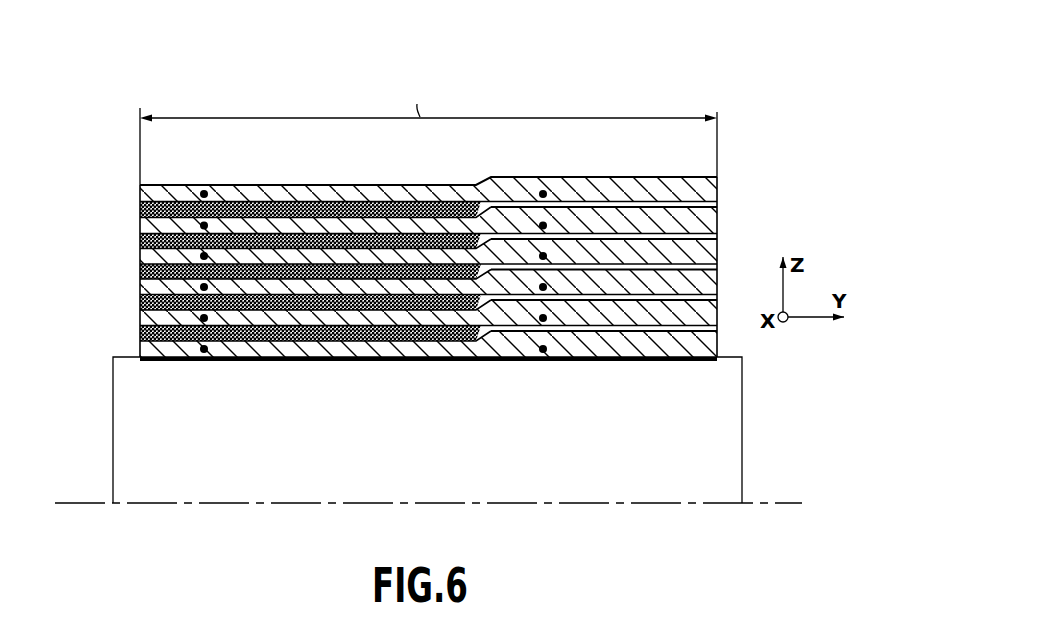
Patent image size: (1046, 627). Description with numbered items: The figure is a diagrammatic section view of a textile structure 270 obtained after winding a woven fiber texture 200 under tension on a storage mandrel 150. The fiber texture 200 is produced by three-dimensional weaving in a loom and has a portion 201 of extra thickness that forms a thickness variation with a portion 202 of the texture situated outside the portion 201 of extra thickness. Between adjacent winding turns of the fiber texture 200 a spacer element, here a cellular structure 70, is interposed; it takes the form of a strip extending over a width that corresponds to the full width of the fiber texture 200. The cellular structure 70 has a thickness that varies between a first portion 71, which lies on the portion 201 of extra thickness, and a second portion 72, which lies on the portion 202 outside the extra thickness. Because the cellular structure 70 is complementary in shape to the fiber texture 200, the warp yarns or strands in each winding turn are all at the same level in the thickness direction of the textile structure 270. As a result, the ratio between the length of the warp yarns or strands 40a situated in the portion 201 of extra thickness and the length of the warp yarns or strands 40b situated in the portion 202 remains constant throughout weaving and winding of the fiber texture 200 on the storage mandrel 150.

The textile structure 270 is at (413, 196).
The fiber texture 200 is at (674, 174).
The portion of extra thickness 201 is at (647, 227).
The portion of the texture situated outside the portion of extra thickness 202 is at (437, 197).
The warp yarns or strands situated in the portion of extra thickness 40a is at (547, 226).
The warp yarns or strands situated in the portion outside the extra thickness 40b is at (204, 194).
The cellular structure 70 is at (138, 210).
The first portion of the cellular structure 71 is at (717, 268).
The second portion of the cellular structure 72 is at (263, 242).
The storage mandrel 150 is at (719, 385).